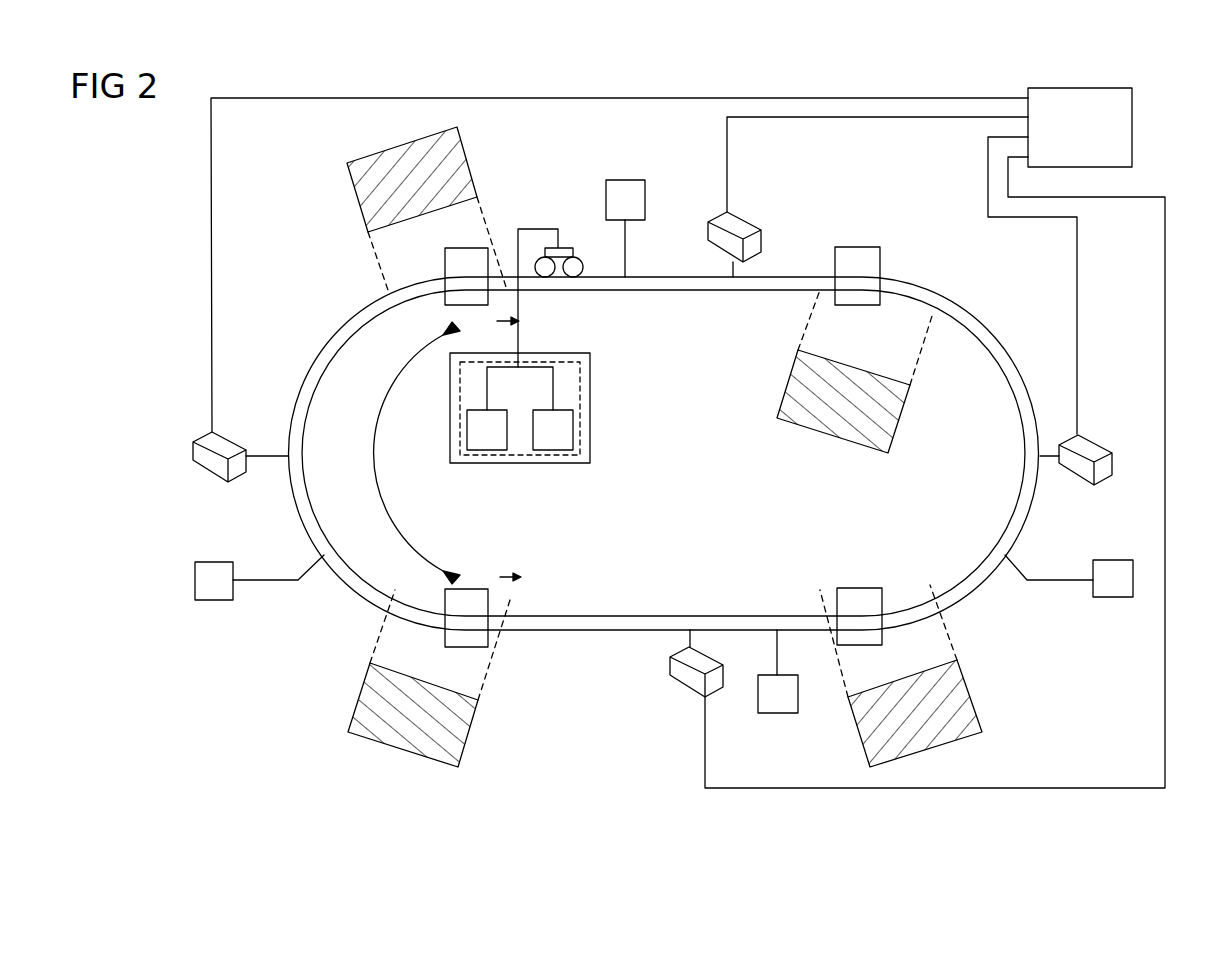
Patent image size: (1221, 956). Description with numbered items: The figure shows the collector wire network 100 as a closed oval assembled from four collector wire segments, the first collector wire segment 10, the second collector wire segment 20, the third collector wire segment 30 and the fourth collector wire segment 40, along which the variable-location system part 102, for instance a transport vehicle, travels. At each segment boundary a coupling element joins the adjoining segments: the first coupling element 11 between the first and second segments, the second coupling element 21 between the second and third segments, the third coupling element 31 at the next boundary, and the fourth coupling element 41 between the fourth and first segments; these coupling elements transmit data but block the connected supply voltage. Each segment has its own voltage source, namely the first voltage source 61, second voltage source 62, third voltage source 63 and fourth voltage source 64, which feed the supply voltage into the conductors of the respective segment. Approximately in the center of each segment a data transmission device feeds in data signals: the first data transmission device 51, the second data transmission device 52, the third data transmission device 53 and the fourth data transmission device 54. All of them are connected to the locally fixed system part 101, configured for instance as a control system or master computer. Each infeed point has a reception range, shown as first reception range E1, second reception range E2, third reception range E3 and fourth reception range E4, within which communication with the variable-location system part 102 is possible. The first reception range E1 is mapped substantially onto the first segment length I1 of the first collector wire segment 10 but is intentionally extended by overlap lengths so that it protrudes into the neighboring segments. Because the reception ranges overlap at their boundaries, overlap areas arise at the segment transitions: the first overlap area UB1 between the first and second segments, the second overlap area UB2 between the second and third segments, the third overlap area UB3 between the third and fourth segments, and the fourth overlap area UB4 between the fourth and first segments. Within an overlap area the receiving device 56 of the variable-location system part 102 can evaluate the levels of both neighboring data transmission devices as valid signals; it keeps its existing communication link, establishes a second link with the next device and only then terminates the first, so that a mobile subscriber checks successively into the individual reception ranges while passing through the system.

The collector wire network 100 is at (316, 228).
The locally fixed system part 101 is at (1132, 128).
The variable-location system part 102 is at (558, 346).
The first collector wire segment 10 is at (312, 361).
The first coupling element 11 is at (444, 270).
The second collector wire segment 20 is at (786, 275).
The second coupling element 21 is at (857, 247).
The third collector wire segment 30 is at (1005, 342).
The third coupling element 31 is at (882, 637).
The fourth collector wire segment 40 is at (585, 613).
The fourth coupling element 41 is at (445, 637).
The first data transmission device 51 is at (230, 440).
The second data transmission device 52 is at (742, 218).
The third data transmission device 53 is at (1096, 444).
The fourth data transmission device 54 is at (682, 700).
The receiving device 56 is at (590, 378).
The first voltage source 61 is at (215, 601).
The second voltage source 62 is at (625, 180).
The third voltage source 63 is at (1113, 597).
The fourth voltage source 64 is at (780, 713).
The first overlap area UB1 is at (477, 165).
The second overlap area UB2 is at (822, 437).
The third transfer region UB3 is at (982, 688).
The fourth overlap area UB4 is at (478, 728).
The first reception range E1 is at (307, 465).
The second reception range E2 is at (700, 292).
The third reception range E3 is at (1016, 424).
The fourth reception range E4 is at (650, 628).
The first segment length I1 is at (445, 457).